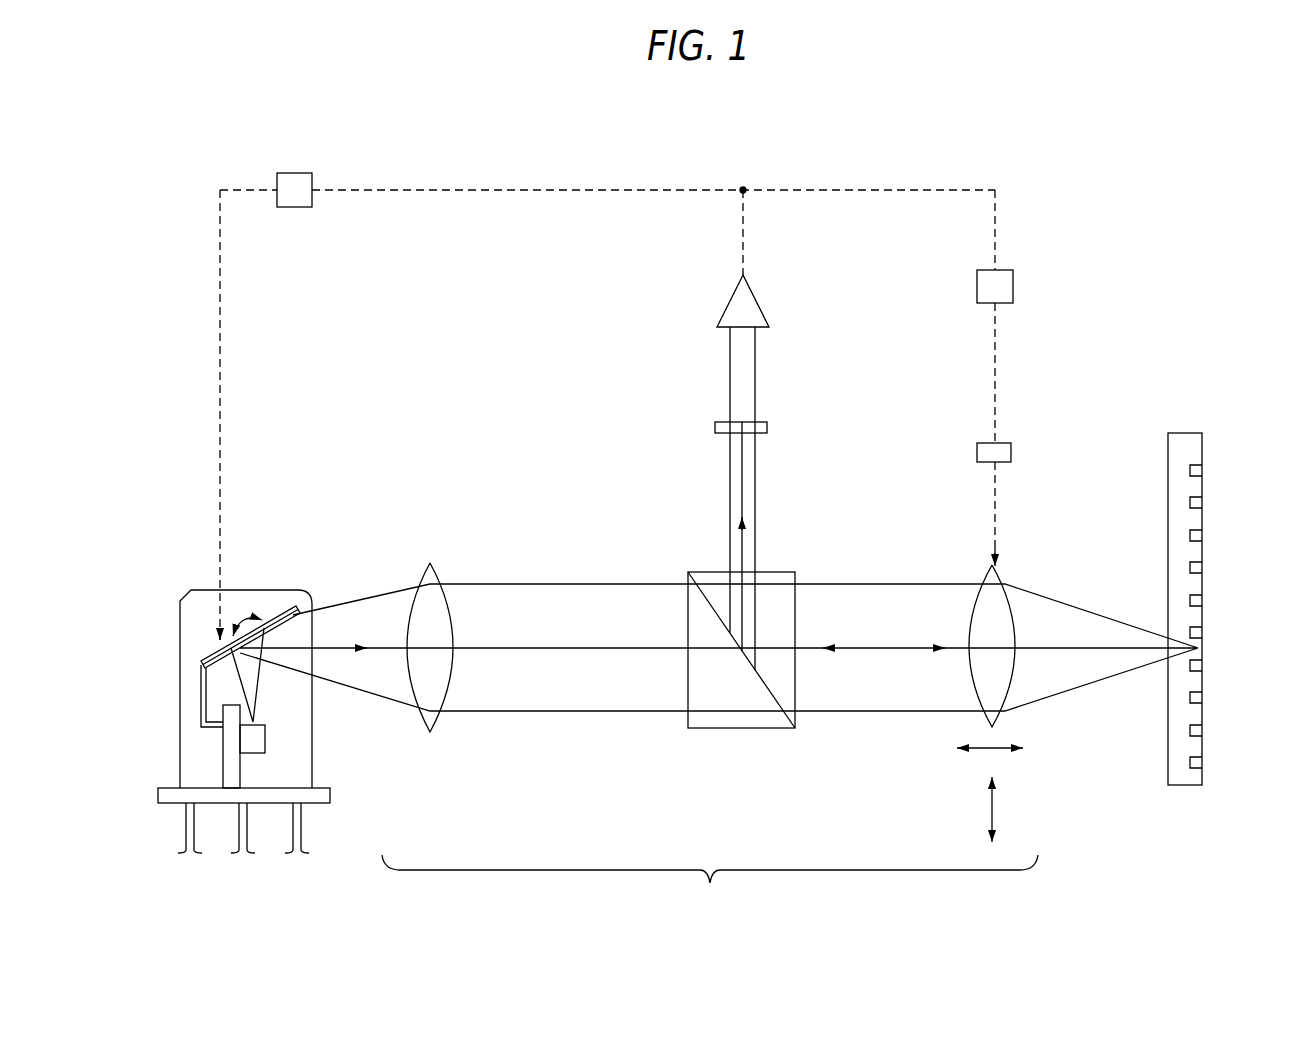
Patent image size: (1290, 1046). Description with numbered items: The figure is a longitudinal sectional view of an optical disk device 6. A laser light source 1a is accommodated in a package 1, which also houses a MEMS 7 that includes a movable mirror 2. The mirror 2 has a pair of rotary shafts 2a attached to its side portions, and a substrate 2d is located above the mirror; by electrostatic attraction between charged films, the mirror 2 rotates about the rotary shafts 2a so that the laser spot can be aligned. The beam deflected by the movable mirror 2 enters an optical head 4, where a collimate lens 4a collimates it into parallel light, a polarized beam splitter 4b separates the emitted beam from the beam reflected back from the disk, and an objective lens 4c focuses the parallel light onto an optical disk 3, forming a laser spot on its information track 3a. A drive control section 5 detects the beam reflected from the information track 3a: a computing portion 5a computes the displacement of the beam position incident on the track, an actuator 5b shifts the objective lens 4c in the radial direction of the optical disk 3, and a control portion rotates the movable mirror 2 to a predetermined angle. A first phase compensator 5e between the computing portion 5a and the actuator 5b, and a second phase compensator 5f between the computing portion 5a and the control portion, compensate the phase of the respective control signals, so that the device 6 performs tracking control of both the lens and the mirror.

The package 1 is at (180, 760).
The laser light source 1a is at (265, 735).
The movable mirror 2 is at (212, 650).
The rotary shafts 2a is at (251, 645).
The substrate 2d is at (201, 705).
The optical disk 3 is at (1200, 433).
The information track 3a is at (1204, 712).
The optical head 4 is at (719, 753).
The collimate lens 4a is at (437, 574).
The polarized beam splitter 4b is at (768, 572).
The objective lens 4c is at (1004, 582).
The drive control section 5 is at (782, 348).
The computing portion 5a is at (730, 300).
The actuator 5b is at (1011, 452).
The first phase compensator 5e is at (1013, 287).
The second phase compensator 5f is at (291, 173).
The optical disk device 6 is at (1094, 164).
The MEMS 7 is at (301, 594).